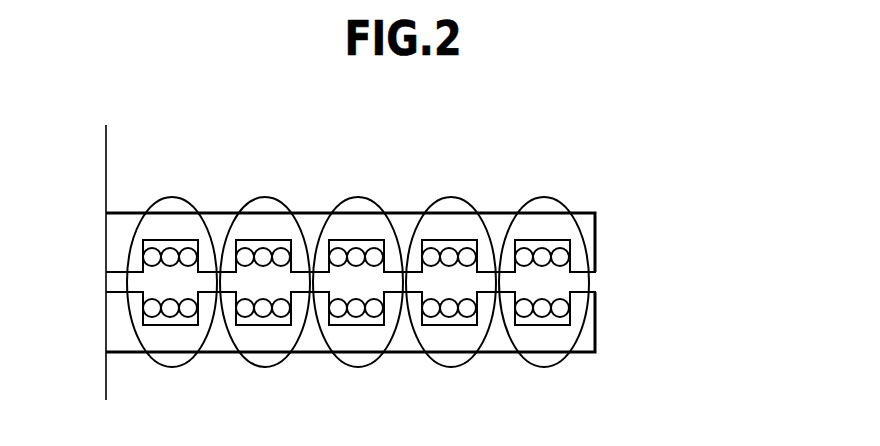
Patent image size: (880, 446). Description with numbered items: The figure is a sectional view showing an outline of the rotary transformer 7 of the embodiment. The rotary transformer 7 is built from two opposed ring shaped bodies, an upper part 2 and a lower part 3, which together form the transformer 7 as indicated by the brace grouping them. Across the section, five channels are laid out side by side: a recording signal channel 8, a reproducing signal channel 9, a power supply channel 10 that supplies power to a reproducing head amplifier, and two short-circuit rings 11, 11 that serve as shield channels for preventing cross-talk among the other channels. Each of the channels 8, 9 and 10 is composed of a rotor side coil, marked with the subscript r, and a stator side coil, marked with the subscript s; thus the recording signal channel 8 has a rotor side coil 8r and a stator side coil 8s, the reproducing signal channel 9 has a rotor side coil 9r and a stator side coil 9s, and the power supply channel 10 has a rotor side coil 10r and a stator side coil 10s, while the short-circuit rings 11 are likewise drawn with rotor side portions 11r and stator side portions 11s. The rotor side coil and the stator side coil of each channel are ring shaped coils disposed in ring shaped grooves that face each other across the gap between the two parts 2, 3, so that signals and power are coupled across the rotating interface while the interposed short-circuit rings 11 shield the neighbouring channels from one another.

The outer ring 2 is at (595, 243).
The inner ring 3 is at (381, 322).
The rotary transformer 7 is at (403, 282).
The recording signal channel 8 is at (527, 364).
The reproducing signal channel 9 is at (342, 364).
The power supply channel 10 is at (157, 364).
The short-circuit ring 11 is at (250, 365).
The rotor side coil 8r is at (541, 264).
The rotor side coil 9r is at (355, 264).
The rotor side coil 10r is at (169, 264).
The rotor side coil 11r is at (262, 264).
The stator side coil 8s is at (542, 314).
The stator side coil 9s is at (356, 314).
The stator side coil 10s is at (170, 314).
The stator side coil 11s is at (263, 314).